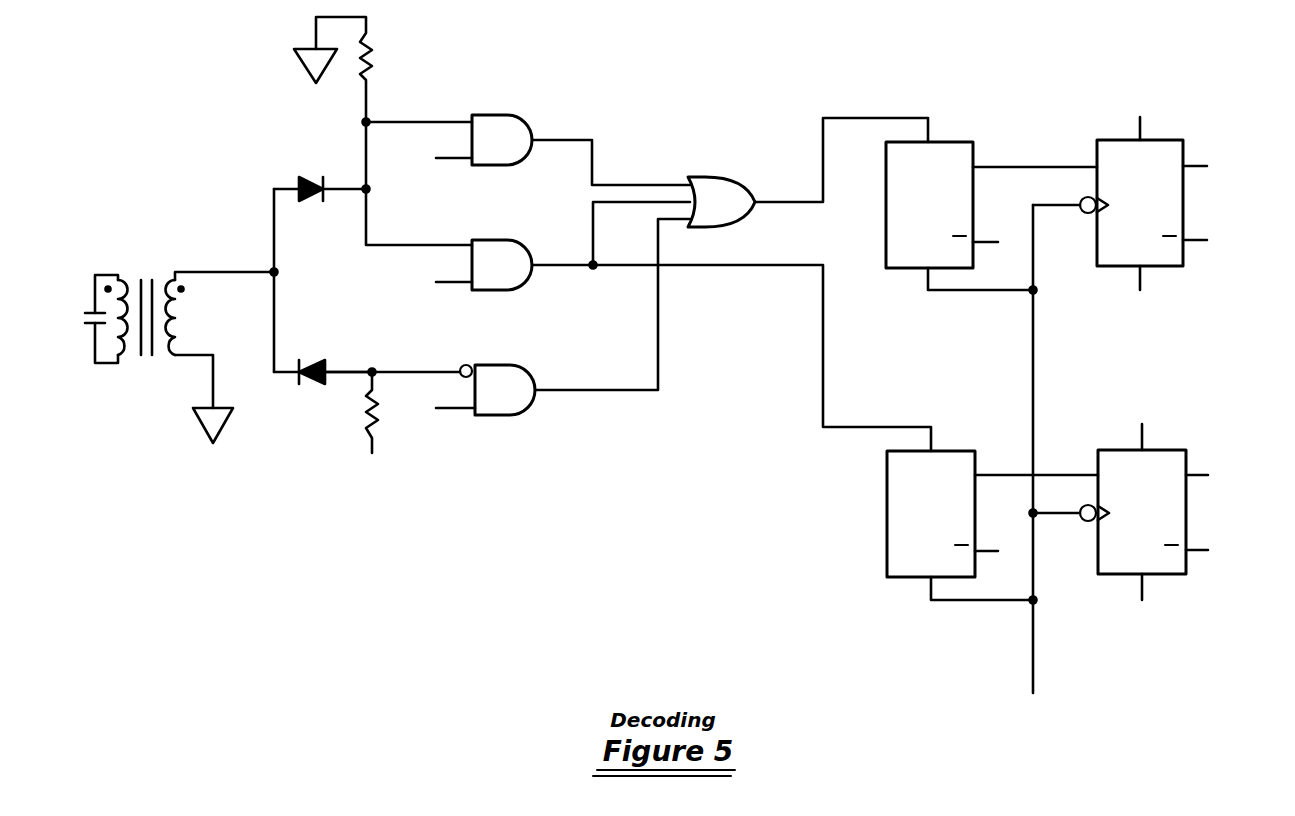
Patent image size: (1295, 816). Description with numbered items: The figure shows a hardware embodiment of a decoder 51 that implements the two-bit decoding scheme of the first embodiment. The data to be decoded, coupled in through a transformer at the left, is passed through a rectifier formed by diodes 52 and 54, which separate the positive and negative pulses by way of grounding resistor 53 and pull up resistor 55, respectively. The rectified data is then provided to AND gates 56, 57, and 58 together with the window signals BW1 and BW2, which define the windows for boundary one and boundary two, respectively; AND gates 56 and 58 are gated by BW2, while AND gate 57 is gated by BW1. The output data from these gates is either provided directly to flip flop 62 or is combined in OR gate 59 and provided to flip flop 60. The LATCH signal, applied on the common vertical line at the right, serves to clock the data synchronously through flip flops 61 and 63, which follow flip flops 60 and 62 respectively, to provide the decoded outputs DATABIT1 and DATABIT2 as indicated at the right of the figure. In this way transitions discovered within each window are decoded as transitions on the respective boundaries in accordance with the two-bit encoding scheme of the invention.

The decoder 51 is at (368, 578).
The diode 52 is at (304, 176).
The grounding resistor 53 is at (378, 46).
The diode 54 is at (318, 362).
The pull up resistor 55 is at (355, 410).
The AND gate 56 is at (486, 112).
The AND gate 57 is at (486, 237).
The AND gate 58 is at (486, 362).
The OR gate 59 is at (706, 175).
The flip flop 60 is at (951, 139).
The flip flop 61 is at (1112, 138).
The flip flop 62 is at (953, 449).
The flip flop 63 is at (1112, 448).